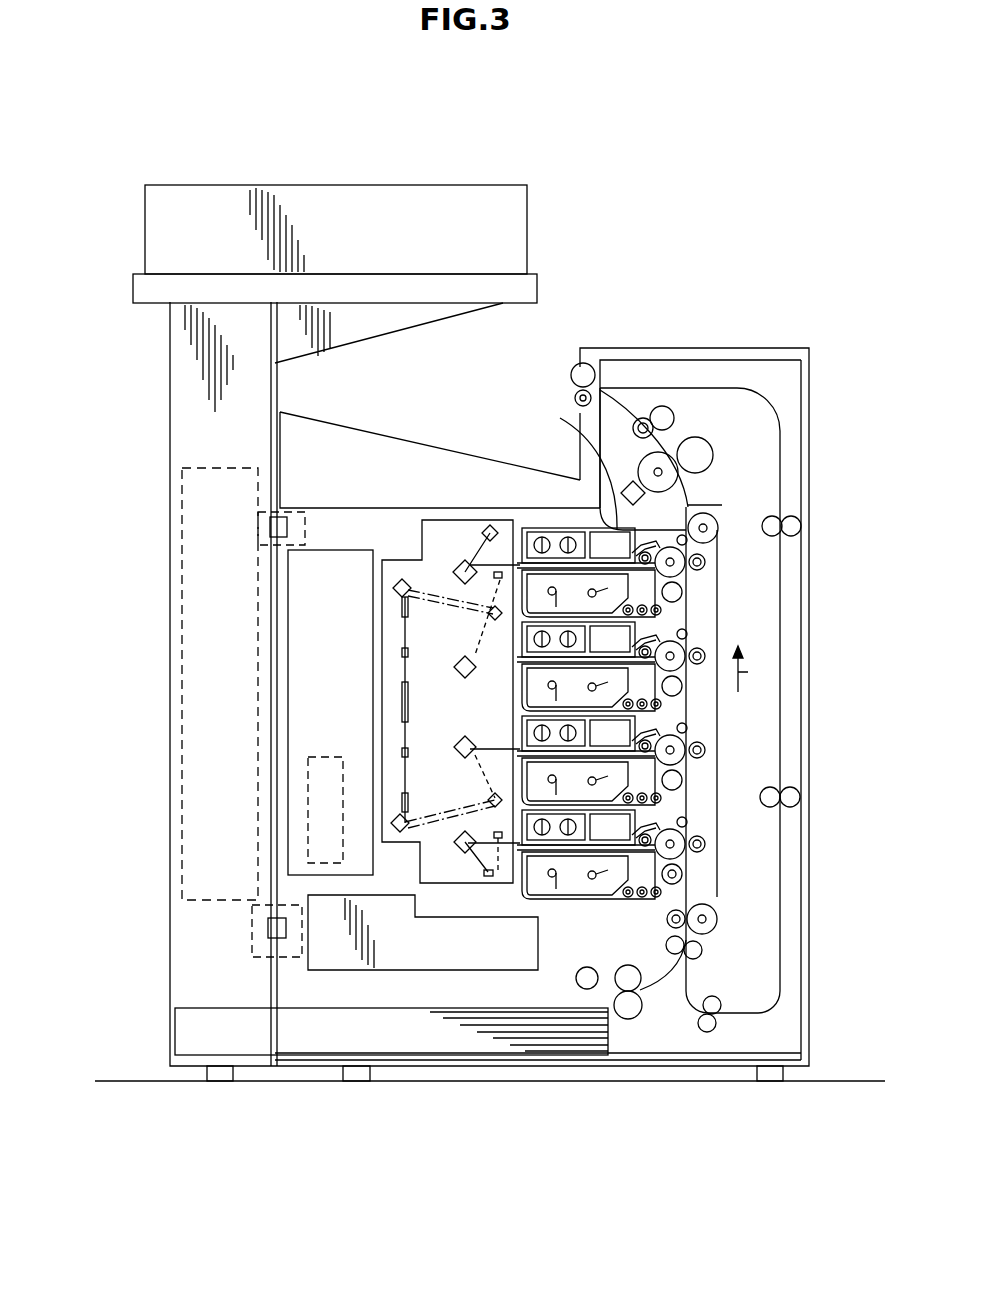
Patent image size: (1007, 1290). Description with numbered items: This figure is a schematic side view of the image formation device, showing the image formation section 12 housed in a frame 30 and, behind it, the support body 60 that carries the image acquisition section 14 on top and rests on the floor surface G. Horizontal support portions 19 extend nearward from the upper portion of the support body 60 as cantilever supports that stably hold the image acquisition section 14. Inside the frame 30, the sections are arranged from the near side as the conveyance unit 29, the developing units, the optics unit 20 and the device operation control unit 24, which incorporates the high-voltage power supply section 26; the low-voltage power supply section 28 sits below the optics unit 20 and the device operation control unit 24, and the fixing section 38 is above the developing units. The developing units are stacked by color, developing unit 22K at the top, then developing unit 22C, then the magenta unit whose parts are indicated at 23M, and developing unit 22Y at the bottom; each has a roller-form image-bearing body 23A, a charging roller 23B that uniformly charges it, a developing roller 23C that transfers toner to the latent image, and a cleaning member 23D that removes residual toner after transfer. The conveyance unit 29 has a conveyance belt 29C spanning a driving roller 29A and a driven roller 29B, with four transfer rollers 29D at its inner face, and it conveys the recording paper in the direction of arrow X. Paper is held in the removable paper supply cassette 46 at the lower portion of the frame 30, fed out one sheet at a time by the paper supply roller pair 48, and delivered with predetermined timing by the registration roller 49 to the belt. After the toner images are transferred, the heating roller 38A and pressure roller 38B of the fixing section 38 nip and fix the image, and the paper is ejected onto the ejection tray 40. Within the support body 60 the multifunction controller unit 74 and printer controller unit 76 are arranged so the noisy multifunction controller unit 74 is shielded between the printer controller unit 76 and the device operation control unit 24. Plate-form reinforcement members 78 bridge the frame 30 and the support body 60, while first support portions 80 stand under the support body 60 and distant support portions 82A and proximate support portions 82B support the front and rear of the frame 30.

The image formation section 12 is at (834, 556).
The image acquisition section 14 is at (216, 185).
The horizontal support portions 19 is at (372, 344).
The optics unit 20 is at (465, 518).
The developing unit (black) 22K is at (557, 524).
The developing unit (cyan) 22C is at (520, 641).
The developing unit (yellow) 22Y is at (520, 799).
The image-bearing body 23A is at (703, 548).
The charging roller 23B is at (592, 478).
The developing roller 23C is at (682, 593).
The cleaning member 23D is at (722, 505).
The image forming unit (magenta) 23M is at (520, 723).
The device operation control unit 24 is at (342, 546).
The high-voltage power supply section 26 is at (327, 757).
The low-voltage power supply section 28 is at (540, 935).
The conveyance unit 29 is at (737, 1014).
The driving roller 29A is at (704, 512).
The driven roller 29B is at (716, 920).
The conveyance belt 29C is at (720, 801).
The transfer rollers 29D is at (705, 566).
The frame 30 is at (783, 352).
The fixing section 38 is at (700, 428).
The heating roller 38A is at (555, 393).
The pressure roller 38B is at (713, 452).
The ejection tray 40 is at (482, 434).
The paper supply cassette 46 is at (610, 1040).
The paper supply roller pair 48 is at (640, 1012).
The registration roller 49 is at (700, 952).
The support body 60 is at (168, 376).
The multifunction controller unit 74 is at (159, 684).
The printer controller unit 76 is at (180, 668).
The reinforcement members 78 is at (268, 528).
The first support portions 80 is at (233, 1080).
The distant support portions 82A is at (784, 1081).
The proximate support portions 82B is at (371, 1080).
The floor surface G is at (126, 1085).
The direction of arrow X is at (751, 669).